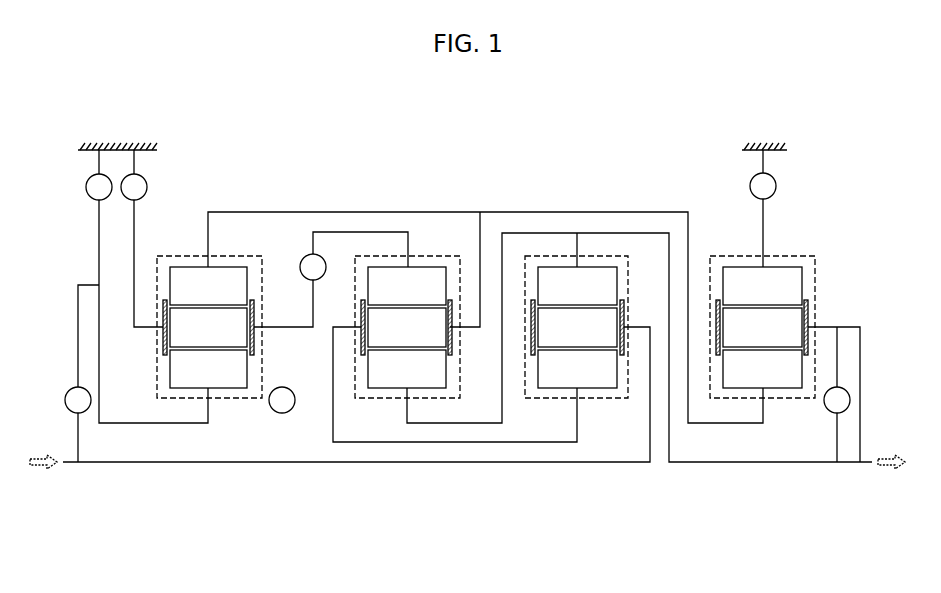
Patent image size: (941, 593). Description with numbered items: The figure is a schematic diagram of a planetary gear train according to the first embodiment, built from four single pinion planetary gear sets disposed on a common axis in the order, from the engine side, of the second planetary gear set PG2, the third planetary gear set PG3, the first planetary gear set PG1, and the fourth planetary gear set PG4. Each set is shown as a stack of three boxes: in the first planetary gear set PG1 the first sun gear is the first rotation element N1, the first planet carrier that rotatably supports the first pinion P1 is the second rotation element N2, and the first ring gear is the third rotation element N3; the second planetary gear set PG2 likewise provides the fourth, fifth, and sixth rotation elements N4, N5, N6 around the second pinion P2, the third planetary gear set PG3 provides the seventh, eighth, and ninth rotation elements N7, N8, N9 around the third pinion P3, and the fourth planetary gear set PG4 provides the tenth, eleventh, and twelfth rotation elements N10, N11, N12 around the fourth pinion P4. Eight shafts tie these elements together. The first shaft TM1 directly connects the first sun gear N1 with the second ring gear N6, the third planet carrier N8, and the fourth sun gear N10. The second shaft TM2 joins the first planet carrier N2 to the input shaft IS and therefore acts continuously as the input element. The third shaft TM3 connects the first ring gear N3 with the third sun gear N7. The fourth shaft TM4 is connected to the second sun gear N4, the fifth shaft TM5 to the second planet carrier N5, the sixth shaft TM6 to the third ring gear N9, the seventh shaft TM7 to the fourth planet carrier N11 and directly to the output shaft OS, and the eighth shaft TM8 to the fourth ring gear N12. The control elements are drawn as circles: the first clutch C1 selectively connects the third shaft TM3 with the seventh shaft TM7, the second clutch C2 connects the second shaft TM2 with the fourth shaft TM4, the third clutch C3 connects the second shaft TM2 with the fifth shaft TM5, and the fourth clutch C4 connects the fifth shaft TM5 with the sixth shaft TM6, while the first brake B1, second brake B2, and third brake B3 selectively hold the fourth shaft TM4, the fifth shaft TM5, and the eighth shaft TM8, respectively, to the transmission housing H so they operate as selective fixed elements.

The first planetary gear set PG1 is at (595, 398).
The second planetary gear set PG2 is at (226, 399).
The third planetary gear set PG3 is at (426, 399).
The fourth planetary gear set PG4 is at (780, 398).
The first rotation element N1 is at (577, 369).
The second rotation element N2 is at (624, 302).
The third rotation element N3 is at (577, 286).
The fourth rotation element N4 is at (208, 369).
The fifth rotation element N5 is at (257, 302).
The sixth rotation element N6 is at (208, 286).
The seventh rotation element N7 is at (407, 369).
The eighth rotation element N8 is at (453, 353).
The ninth rotation element N9 is at (407, 286).
The tenth rotation element N10 is at (762, 369).
The eleventh rotation element N11 is at (809, 302).
The twelfth rotation element N12 is at (762, 286).
The first pinion P1 is at (577, 327).
The second pinion P2 is at (208, 327).
The third pinion P3 is at (407, 327).
The fourth pinion P4 is at (762, 327).
The first shaft TM1 is at (467, 443).
The second shaft TM2 is at (530, 463).
The third shaft TM3 is at (707, 463).
The fourth shaft TM4 is at (137, 423).
The fifth shaft TM5 is at (136, 228).
The sixth shaft TM6 is at (343, 232).
The seventh shaft TM7 is at (853, 332).
The eighth shaft TM8 is at (765, 217).
The first brake B1 is at (99, 187).
The second brake B2 is at (134, 187).
The third brake B3 is at (763, 186).
The first clutch C1 is at (837, 400).
The second clutch C2 is at (78, 400).
The third clutch C3 is at (282, 400).
The fourth clutch C4 is at (313, 267).
The input shaft IS is at (72, 466).
The output shaft OS is at (862, 468).
The transmission housing H is at (122, 143).